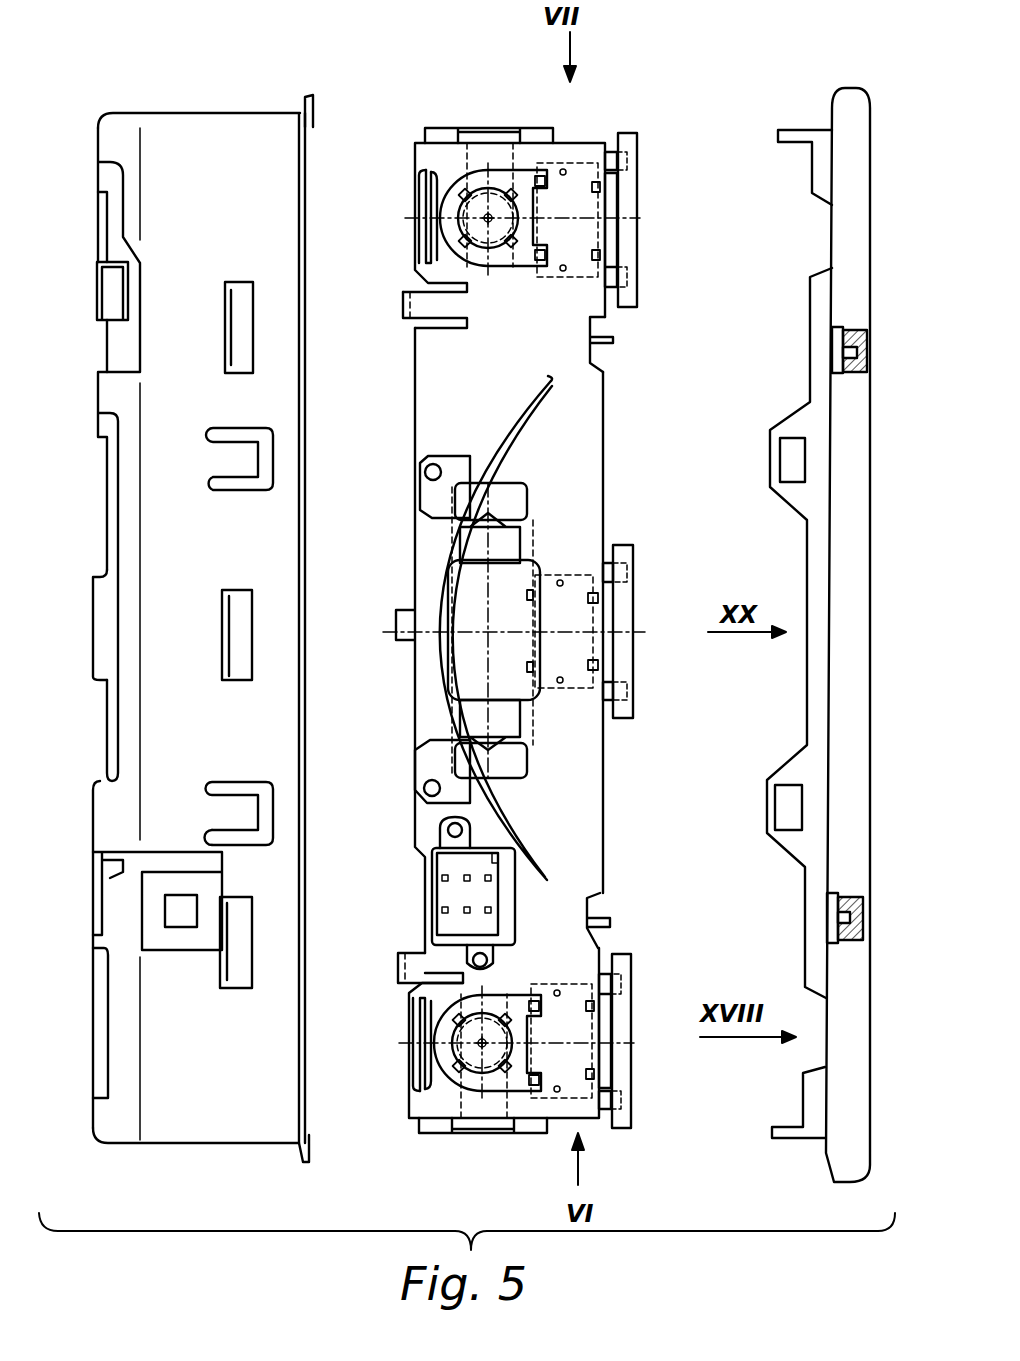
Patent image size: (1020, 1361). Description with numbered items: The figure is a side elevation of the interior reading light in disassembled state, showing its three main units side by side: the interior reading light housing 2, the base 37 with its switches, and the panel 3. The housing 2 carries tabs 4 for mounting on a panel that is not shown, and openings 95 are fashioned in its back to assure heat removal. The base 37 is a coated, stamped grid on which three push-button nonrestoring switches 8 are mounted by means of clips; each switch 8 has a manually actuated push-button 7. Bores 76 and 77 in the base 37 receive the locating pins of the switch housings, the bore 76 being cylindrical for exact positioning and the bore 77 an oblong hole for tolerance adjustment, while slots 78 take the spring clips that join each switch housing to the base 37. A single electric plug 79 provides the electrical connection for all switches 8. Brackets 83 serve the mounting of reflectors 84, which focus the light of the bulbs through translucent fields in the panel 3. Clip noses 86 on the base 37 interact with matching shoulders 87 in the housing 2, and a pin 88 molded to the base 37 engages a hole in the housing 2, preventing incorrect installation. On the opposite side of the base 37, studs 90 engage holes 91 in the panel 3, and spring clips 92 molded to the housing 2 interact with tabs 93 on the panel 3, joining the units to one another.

The interior reading light housing 2 is at (207, 110).
The panel 3 is at (860, 92).
The tabs 4 is at (253, 320).
The push-button 7 is at (637, 175).
The push-button nonrestoring switch 8 is at (645, 210).
The base 37 is at (603, 393).
The bore 76 is at (566, 172).
The bore 77 is at (565, 271).
The slots 78 is at (535, 180).
The electric plug 79 is at (432, 918).
The brackets 83 is at (419, 190).
The reflectors 84 is at (428, 225).
The clip noses 86 is at (413, 333).
The shoulders 87 is at (118, 292).
The pin 88 is at (398, 612).
The studs 90 is at (600, 343).
The holes 91 is at (857, 353).
The spring clips 92 is at (258, 460).
The tabs 93 is at (790, 130).
The openings 95 is at (98, 232).